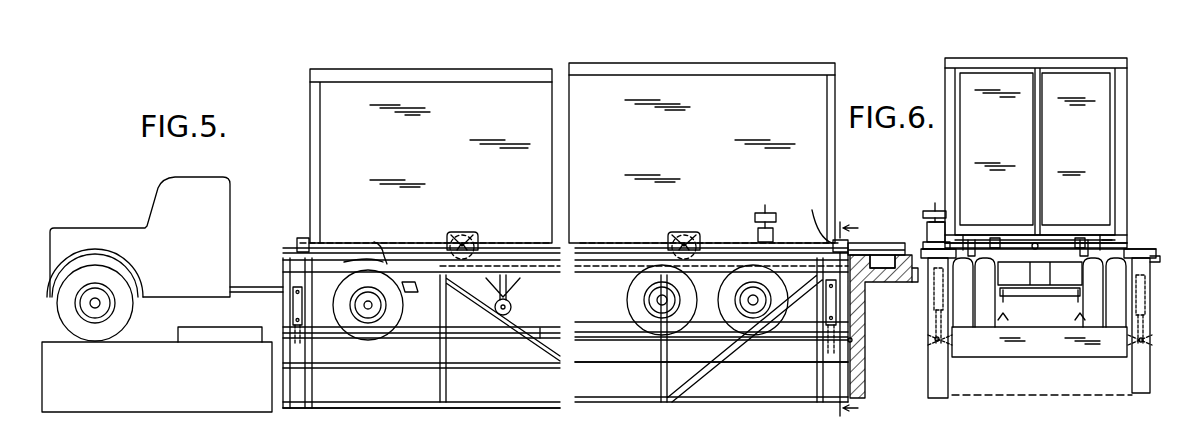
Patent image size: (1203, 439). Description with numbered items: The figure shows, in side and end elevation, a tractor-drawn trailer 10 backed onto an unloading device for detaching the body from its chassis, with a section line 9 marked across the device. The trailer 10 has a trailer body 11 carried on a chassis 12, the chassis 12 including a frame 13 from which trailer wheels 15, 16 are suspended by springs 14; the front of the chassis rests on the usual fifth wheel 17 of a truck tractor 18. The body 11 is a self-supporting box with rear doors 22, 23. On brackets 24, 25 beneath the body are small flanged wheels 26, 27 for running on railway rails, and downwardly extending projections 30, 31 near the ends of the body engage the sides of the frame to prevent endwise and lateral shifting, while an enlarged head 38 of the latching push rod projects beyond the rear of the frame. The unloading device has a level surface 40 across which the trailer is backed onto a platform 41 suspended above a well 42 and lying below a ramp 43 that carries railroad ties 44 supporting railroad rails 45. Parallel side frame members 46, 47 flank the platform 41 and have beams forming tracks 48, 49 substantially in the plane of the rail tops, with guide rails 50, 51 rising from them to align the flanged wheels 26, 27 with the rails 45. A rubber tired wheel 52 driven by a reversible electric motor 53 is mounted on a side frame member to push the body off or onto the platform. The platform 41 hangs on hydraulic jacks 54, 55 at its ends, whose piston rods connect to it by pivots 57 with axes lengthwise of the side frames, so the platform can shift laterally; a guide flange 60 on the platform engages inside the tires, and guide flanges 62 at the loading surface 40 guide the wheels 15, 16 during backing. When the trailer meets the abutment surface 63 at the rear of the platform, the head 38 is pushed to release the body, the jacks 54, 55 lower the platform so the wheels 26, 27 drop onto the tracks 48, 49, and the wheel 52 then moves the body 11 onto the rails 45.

In FIG. 5, the section line 9 is at (849, 320).
In FIG. 5, the tractor-drawn trailer 10 is at (304, 184).
In FIG. 6, the tractor-drawn trailer 10 is at (1141, 158).
In FIG. 5, the trailer body 11 is at (494, 68).
In FIG. 6, the trailer body 11 is at (1054, 59).
In FIG. 5, the chassis 12 is at (618, 291).
In FIG. 6, the chassis 12 is at (1052, 238).
In FIG. 5, the frame 13 is at (298, 256).
In FIG. 6, the frame 13 is at (1046, 268).
In FIG. 6, the springs 14 is at (1075, 296).
In FIG. 5, the trailer wheel 15 is at (633, 306).
In FIG. 5, the trailer wheel 16 is at (738, 276).
In FIG. 6, the trailer wheel 16 is at (968, 327).
In FIG. 5, the fifth wheel 17 is at (391, 242).
In FIG. 5, the truck tractor 18 is at (238, 231).
In FIG. 6, the rear door 22 is at (1004, 141).
In FIG. 6, the rear door 23 is at (1082, 141).
In FIG. 5, the bracket 24 is at (462, 230).
In FIG. 5, the bracket 25 is at (684, 230).
In FIG. 5, the flanged wheel 26 is at (449, 240).
In FIG. 5, the flanged wheel 27 is at (668, 242).
In FIG. 6, the flanged wheel 27 is at (966, 233).
In FIG. 6, the downwardly extending projection 30 is at (1008, 235).
In FIG. 6, the downwardly extending projection 31 is at (1076, 236).
In FIG. 5, the enlarged head 38 is at (825, 223).
In FIG. 6, the enlarged head 38 is at (1033, 240).
In FIG. 5, the level surface 40 is at (156, 336).
In FIG. 5, the platform 41 is at (626, 352).
In FIG. 6, the platform 41 is at (1042, 350).
In FIG. 5, the well 42 is at (508, 392).
In FIG. 6, the well 42 is at (1044, 383).
In FIG. 5, the ramp 43 is at (880, 268).
In FIG. 5, the ties 44 is at (903, 283).
In FIG. 5, the railroad rails 45 is at (882, 243).
In FIG. 6, the side frame member 46 is at (928, 378).
In FIG. 6, the side frame member 47 is at (1150, 370).
In FIG. 5, the track 48 is at (490, 262).
In FIG. 6, the track 49 is at (1152, 261).
In FIG. 6, the guide rail 50 is at (926, 246).
In FIG. 6, the guide rail 51 is at (1148, 243).
In FIG. 5, the rubber tired wheel 52 is at (768, 212).
In FIG. 6, the rubber tired wheel 52 is at (937, 210).
In FIG. 5, the reversible electric motor 53 is at (774, 232).
In FIG. 6, the reversible electric motor 53 is at (928, 228).
In FIG. 5, the hydraulic jack 54 is at (292, 306).
In FIG. 6, the hydraulic jack 54 is at (927, 312).
In FIG. 6, the hydraulic jack 55 is at (1158, 299).
In FIG. 6, the pivot 57 is at (936, 342).
In FIG. 5, the guide flange 60 is at (545, 328).
In FIG. 5, the guide flange 62 is at (208, 333).
In FIG. 5, the abutment surface 63 is at (852, 340).